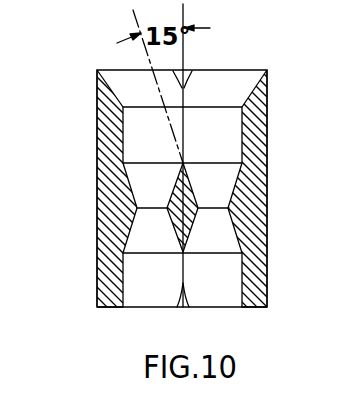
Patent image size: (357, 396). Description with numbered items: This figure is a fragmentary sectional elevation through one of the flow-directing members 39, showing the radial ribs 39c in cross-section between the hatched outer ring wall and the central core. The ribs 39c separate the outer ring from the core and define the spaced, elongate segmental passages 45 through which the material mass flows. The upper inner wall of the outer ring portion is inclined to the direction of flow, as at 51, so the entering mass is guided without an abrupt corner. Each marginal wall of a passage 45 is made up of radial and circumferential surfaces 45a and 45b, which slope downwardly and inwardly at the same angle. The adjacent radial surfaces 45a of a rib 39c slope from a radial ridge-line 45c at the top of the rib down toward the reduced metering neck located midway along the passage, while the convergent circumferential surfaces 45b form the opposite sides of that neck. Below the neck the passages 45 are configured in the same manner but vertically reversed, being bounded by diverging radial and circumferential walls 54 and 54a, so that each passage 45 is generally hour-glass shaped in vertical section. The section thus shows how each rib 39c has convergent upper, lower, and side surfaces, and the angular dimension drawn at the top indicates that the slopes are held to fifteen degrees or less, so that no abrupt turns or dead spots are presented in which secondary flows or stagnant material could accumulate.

The member 39 is at (92, 233).
The radial ribs 39c is at (156, 195).
The segmental passages 45 is at (222, 117).
The radial sloped surfaces 45a is at (180, 182).
The circumferential sloped surfaces 45b is at (215, 193).
The radial ridge-line 45c is at (185, 168).
The inclined upper inner wall 51 is at (268, 103).
The diverging radial walls 54 is at (170, 231).
The diverging circumferential walls 54a is at (214, 249).